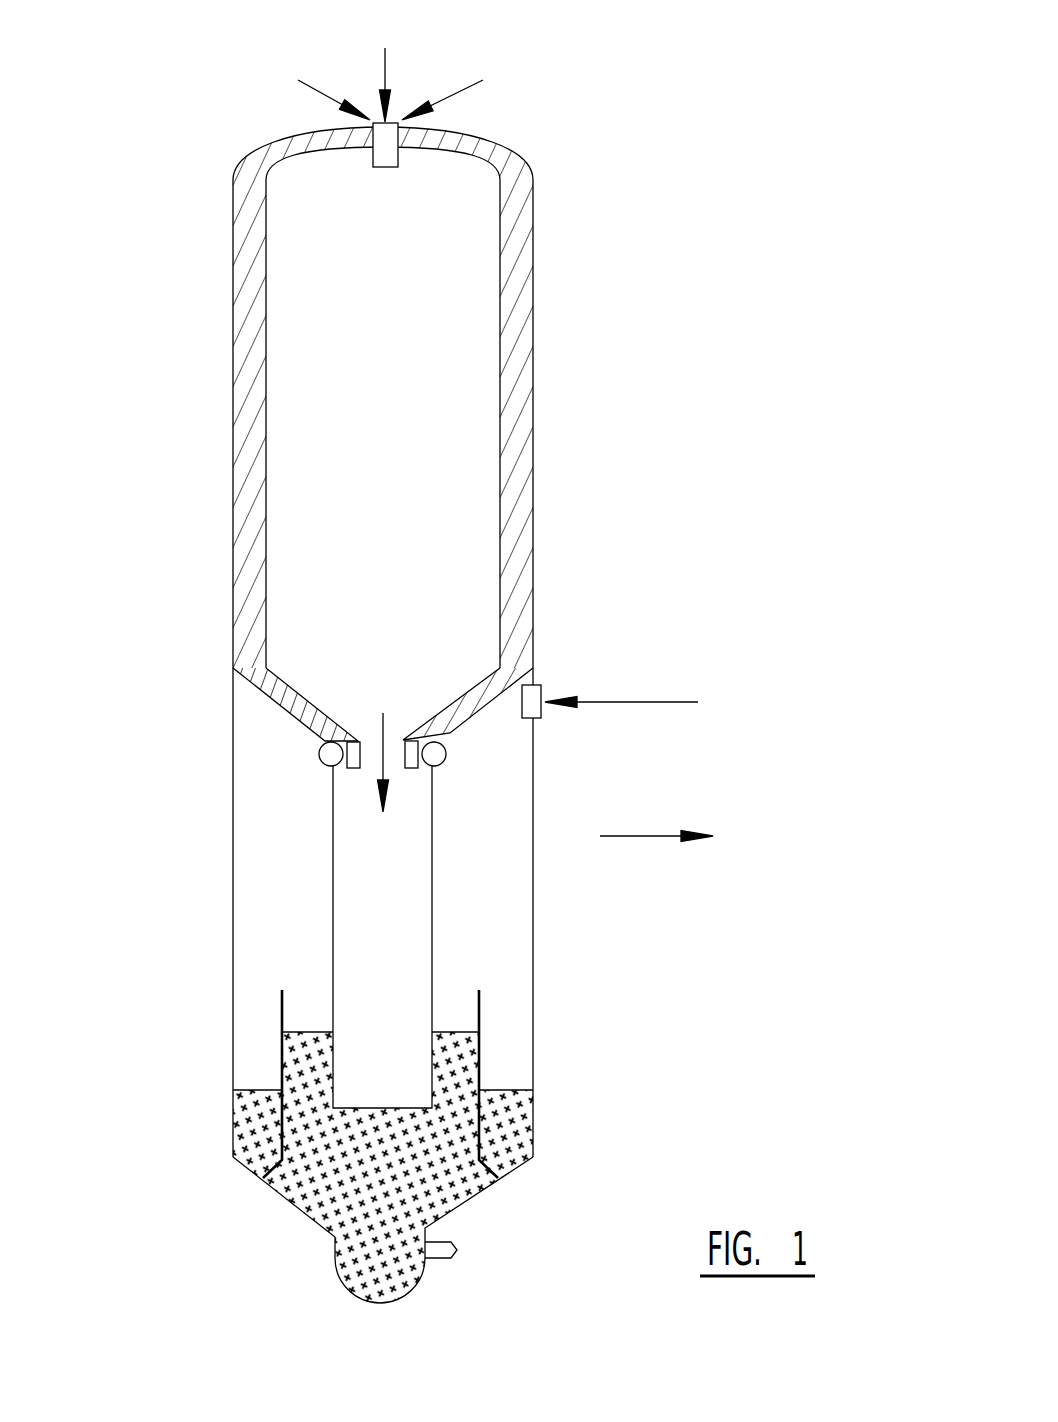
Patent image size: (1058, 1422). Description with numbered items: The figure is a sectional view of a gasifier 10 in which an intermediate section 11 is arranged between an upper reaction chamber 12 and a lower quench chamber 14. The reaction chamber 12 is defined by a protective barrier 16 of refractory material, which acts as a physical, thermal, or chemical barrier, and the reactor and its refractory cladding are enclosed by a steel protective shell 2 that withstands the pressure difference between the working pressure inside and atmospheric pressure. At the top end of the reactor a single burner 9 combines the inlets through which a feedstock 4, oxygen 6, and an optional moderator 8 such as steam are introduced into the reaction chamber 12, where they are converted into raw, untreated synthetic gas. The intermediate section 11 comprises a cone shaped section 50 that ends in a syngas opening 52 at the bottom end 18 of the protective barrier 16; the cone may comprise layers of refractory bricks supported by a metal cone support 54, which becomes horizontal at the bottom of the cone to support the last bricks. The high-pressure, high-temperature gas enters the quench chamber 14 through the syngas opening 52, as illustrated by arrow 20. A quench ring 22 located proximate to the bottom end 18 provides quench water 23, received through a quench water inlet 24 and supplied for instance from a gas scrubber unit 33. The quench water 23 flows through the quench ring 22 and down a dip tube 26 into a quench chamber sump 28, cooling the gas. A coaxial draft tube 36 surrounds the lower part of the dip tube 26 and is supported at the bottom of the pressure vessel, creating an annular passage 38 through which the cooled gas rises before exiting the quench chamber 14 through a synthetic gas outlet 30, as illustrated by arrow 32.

The protective shell 2 is at (233, 405).
The feedstock 4 is at (401, 42).
The oxygen 6 is at (289, 74).
The moderator 8 is at (518, 96).
The burner 9 is at (379, 158).
The gasifier 10 is at (735, 400).
The intermediate section 11 is at (500, 734).
The reaction chamber 12 is at (571, 297).
The quench chamber 14 is at (569, 1002).
The protective barrier 16 is at (247, 530).
The bottom end 18 is at (272, 690).
The arrow 20 is at (387, 784).
The quench ring 22 is at (318, 745).
The quench water 23 is at (748, 713).
The quench water inlet 24 is at (540, 690).
The dip tube 26 is at (435, 922).
The quench chamber sump 28 is at (455, 1195).
The synthetic gas outlet 30 is at (586, 842).
The arrow 32 is at (656, 823).
The gas scrubber unit 33 is at (766, 853).
The draft tube 36 is at (482, 1010).
The annular passage 38 is at (315, 1040).
The cone shaped section 50 is at (455, 697).
The syngas opening 52 is at (370, 748).
The metal cone support 54 is at (455, 733).